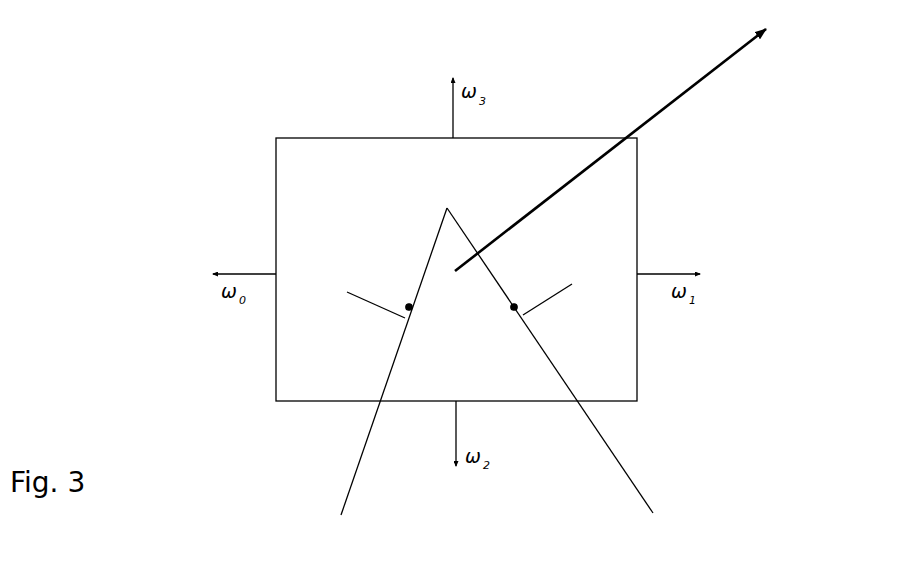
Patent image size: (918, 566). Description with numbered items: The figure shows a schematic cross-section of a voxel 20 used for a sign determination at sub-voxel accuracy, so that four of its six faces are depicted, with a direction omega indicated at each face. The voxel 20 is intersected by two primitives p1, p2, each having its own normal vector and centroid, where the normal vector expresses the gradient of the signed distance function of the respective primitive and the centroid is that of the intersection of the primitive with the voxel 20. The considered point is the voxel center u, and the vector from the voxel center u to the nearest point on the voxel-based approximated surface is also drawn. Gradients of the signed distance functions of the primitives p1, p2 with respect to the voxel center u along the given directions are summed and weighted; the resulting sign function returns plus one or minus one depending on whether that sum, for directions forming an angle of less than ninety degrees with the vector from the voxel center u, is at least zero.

The voxel 20 is at (310, 113).
The first primitive p1 is at (345, 453).
The second primitive p2 is at (606, 479).
The voxel center u is at (453, 257).